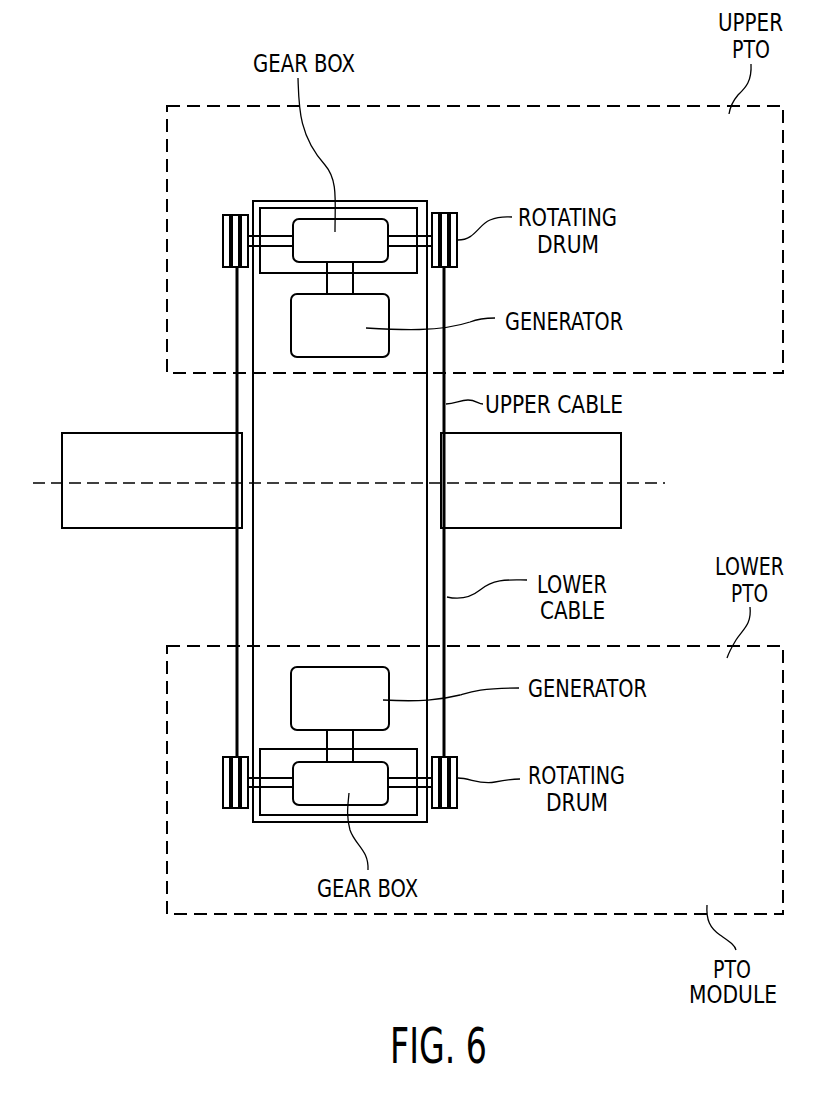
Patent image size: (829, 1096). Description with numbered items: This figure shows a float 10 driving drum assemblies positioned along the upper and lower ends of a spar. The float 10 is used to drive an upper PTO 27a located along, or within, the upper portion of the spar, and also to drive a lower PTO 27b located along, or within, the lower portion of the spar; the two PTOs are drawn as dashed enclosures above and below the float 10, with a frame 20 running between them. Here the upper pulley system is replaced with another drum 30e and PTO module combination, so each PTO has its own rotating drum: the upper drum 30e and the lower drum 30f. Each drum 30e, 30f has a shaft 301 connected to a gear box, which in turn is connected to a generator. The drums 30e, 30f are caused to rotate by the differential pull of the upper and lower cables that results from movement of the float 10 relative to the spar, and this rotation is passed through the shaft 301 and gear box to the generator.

The float 10 is at (610, 452).
The frame of PTO module 20 is at (385, 201).
The upper PTO 27a is at (167, 277).
The lower PTO 27b is at (167, 697).
The drum 30e is at (222, 229).
The drum 30f is at (223, 793).
The shaft 301 is at (277, 238).